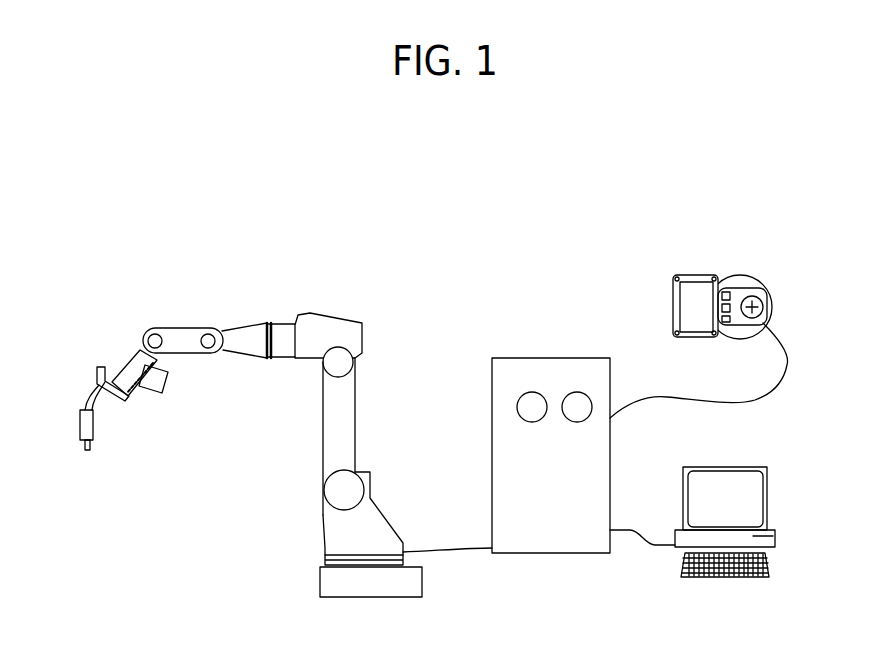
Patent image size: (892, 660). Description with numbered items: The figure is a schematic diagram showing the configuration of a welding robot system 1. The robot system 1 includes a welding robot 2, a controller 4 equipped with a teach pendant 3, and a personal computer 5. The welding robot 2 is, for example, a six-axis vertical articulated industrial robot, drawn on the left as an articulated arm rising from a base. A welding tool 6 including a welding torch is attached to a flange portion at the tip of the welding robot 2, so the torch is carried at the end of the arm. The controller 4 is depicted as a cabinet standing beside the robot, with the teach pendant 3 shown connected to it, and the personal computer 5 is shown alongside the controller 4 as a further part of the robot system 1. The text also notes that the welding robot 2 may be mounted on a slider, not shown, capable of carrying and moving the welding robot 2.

The robot system 1 is at (485, 250).
The welding robot 2 is at (277, 392).
The teach pendant 3 is at (672, 297).
The controller 4 is at (527, 357).
The personal computer 5 is at (728, 467).
The welding tool 6 is at (95, 422).